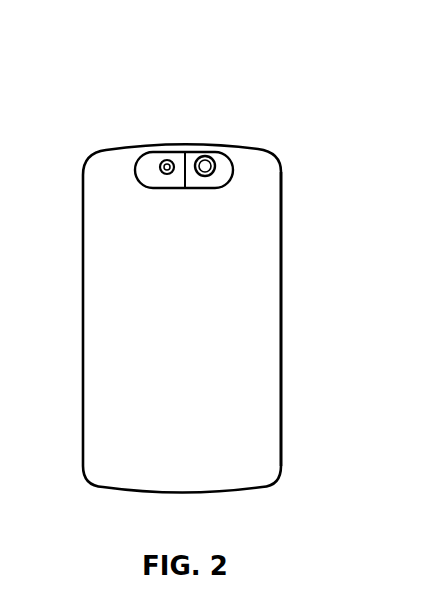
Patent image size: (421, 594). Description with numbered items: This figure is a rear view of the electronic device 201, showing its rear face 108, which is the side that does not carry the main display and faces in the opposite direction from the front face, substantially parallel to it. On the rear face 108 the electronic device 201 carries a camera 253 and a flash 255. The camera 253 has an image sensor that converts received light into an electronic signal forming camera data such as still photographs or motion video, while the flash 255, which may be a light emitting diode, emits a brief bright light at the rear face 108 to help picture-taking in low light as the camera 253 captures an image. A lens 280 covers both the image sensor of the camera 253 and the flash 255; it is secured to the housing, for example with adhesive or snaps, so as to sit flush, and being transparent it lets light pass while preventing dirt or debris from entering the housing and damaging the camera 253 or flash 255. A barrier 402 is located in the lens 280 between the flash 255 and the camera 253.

The electronic device 201 is at (98, 86).
The rear face 108 is at (253, 167).
The lens 280 is at (133, 170).
The camera 253 is at (166, 158).
The flash 255 is at (200, 155).
The barrier 402 is at (185, 167).